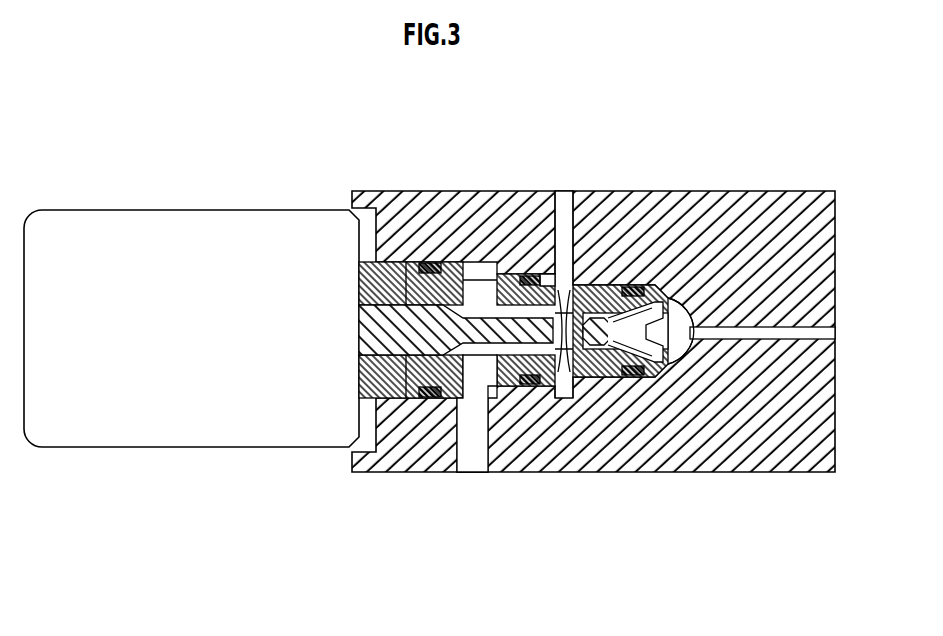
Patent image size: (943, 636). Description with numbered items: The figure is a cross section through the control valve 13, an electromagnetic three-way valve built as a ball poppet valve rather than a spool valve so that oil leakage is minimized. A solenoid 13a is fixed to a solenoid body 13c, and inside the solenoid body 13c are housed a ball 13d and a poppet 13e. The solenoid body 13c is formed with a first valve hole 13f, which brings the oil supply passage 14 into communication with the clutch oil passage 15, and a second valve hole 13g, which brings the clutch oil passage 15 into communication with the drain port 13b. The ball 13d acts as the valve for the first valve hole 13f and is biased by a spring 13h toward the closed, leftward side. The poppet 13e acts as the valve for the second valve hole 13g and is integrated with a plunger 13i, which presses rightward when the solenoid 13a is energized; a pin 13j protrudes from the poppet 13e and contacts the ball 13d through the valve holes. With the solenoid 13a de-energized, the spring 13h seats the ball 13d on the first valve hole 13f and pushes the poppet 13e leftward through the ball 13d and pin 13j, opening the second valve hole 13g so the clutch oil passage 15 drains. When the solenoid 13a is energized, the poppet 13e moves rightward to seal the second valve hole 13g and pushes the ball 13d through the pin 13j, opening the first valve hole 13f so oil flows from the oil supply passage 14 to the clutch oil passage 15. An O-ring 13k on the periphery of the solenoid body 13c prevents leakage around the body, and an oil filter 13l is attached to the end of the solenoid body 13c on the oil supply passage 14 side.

The control valve 13 is at (278, 480).
The solenoid 13a is at (152, 447).
The drain port 13b is at (472, 455).
The solenoid body 13c is at (512, 273).
The ball 13d is at (598, 350).
The poppet 13e is at (538, 274).
The first valve hole 13f is at (565, 398).
The second valve hole 13g is at (548, 392).
The spring 13h is at (680, 300).
The plunger 13i is at (401, 318).
The pin 13j is at (637, 285).
The O-ring 13k is at (633, 290).
The oil filter 13l is at (687, 362).
The oil supply passage 14 is at (822, 333).
The clutch oil passage 15 is at (571, 196).